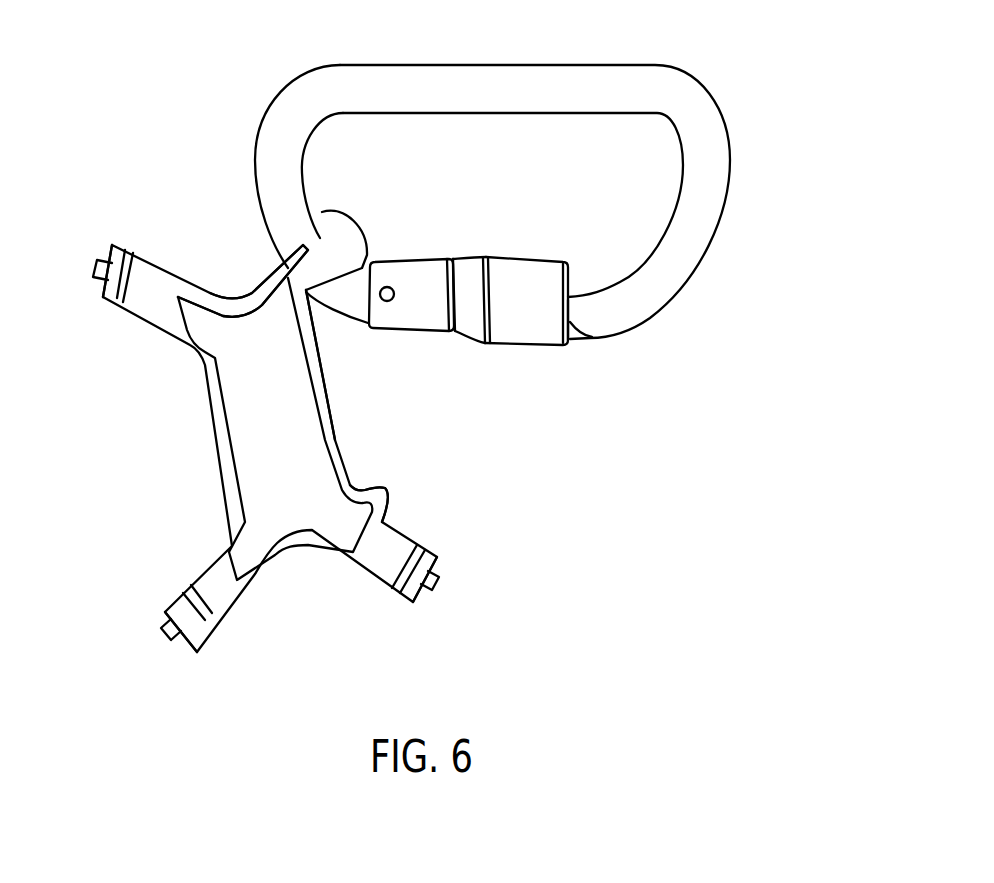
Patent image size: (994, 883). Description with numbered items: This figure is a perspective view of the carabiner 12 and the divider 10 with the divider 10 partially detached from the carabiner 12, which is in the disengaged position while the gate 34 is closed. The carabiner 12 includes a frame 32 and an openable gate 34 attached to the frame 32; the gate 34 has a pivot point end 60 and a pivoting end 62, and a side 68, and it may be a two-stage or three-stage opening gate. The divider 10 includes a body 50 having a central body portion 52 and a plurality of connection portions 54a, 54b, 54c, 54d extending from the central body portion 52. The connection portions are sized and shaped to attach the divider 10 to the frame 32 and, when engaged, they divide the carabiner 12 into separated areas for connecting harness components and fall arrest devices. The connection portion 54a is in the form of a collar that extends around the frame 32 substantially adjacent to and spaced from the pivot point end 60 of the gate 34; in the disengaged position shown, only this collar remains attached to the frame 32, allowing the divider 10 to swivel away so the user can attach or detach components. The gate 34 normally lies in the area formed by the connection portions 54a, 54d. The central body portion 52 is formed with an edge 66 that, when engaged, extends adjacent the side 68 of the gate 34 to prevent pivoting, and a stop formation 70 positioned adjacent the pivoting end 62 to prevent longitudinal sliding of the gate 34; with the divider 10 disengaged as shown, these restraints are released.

The divider 10 is at (127, 504).
The carabiner 12 is at (733, 84).
The frame 32 is at (733, 140).
The gate 34 is at (546, 367).
The body 50 is at (192, 395).
The central body portion 52 is at (255, 428).
The connection portion 54a is at (300, 215).
The connection portion 54b is at (140, 301).
The connection portion 54c is at (212, 612).
The connection portion 54d is at (432, 555).
The pivot point end 60 is at (386, 267).
The pivoting end 62 is at (572, 320).
The edge 66 is at (334, 427).
The side 68 is at (545, 262).
The stop formation 70 is at (372, 492).